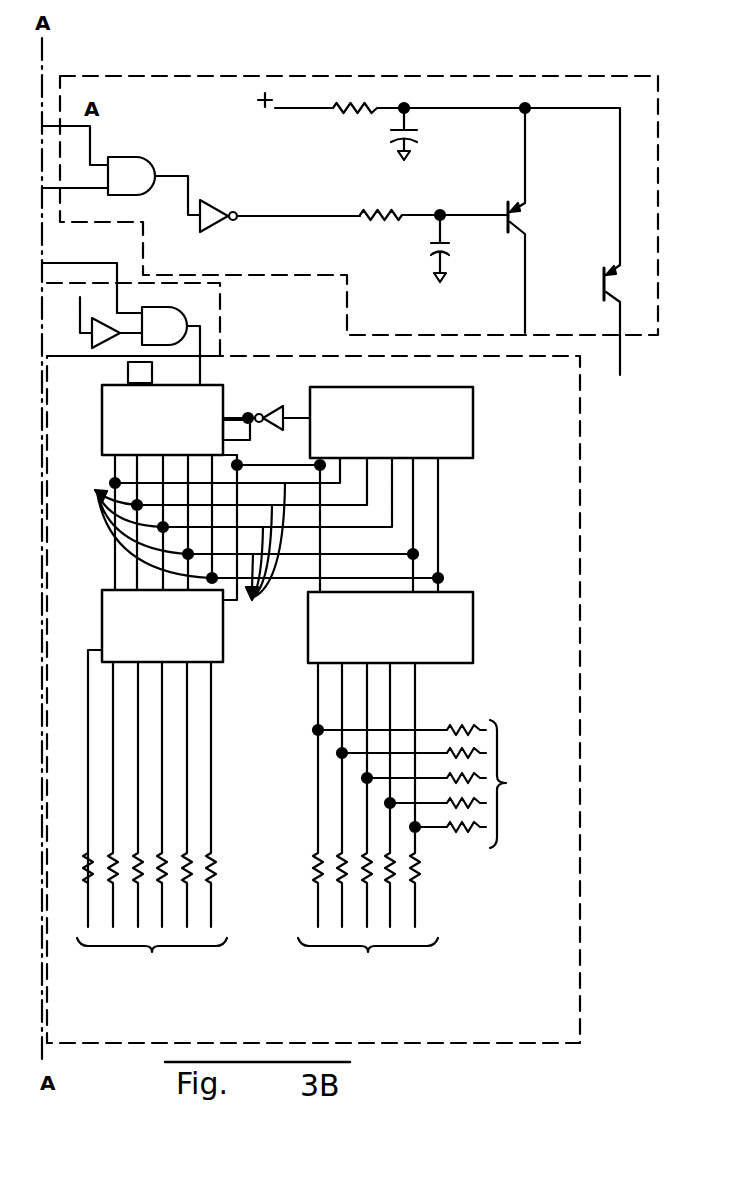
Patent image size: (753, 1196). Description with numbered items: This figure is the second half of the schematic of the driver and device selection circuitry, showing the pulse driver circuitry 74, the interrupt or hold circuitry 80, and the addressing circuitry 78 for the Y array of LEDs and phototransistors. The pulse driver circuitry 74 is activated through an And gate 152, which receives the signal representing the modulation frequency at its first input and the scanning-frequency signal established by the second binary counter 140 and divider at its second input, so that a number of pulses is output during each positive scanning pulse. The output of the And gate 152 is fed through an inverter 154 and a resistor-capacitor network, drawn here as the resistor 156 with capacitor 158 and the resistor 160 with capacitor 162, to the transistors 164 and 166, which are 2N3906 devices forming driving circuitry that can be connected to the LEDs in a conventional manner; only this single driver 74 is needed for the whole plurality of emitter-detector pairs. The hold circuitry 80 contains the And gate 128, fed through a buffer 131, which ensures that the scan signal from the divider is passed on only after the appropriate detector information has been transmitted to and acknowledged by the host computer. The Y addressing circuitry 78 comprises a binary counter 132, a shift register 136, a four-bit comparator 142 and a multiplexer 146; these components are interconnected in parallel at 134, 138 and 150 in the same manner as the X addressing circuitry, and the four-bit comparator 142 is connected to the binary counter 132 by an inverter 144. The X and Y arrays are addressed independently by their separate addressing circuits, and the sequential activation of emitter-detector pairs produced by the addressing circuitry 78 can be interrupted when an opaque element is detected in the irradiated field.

The pulse driver circuitry 74 is at (218, 77).
The addressing circuitry 78 is at (580, 683).
The interrupt circuitry 80 is at (221, 309).
The And gate 128 is at (190, 304).
The buffer 131 is at (103, 348).
The binary counter 132 is at (107, 410).
The parallel interconnection 134 is at (132, 524).
The shift register 136 is at (102, 604).
The parallel interconnection 138 is at (152, 826).
The second binary counter 140 is at (259, 559).
The 4 bit comparator 142 is at (465, 407).
The inverter 144 is at (280, 412).
The multiplexer 146 is at (467, 610).
The parallel interconnection 150 is at (402, 826).
The And gate 152 is at (135, 165).
The inverter 154 is at (210, 207).
The resistor 156 is at (378, 222).
The capacitor 158 is at (452, 248).
The resistor 160 is at (352, 114).
The capacitor 162 is at (422, 137).
The transistor 164 is at (520, 223).
The transistor 166 is at (612, 282).